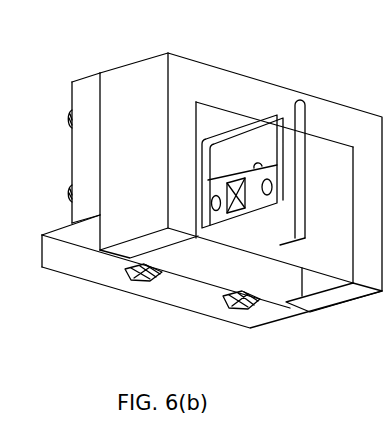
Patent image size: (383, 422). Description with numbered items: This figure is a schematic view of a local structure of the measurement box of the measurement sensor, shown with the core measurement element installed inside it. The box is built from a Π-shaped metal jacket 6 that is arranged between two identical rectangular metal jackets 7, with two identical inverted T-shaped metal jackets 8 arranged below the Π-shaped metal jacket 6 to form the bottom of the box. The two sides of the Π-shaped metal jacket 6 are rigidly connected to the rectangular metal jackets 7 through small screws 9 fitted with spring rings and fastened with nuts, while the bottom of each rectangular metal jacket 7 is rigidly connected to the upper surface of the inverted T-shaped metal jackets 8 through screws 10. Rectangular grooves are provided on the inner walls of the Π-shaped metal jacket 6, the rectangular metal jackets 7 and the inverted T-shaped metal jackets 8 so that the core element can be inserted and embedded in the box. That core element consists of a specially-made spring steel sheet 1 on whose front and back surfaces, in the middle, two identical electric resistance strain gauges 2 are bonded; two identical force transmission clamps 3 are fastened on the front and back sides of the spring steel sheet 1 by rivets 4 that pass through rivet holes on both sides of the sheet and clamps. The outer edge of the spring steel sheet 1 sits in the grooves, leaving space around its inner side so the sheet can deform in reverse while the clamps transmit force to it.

The spring steel sheet 1 is at (307, 117).
The strain gauge 2 is at (245, 200).
The force transmission clamp 3 is at (245, 200).
The rivet 4 is at (268, 208).
The Π-shaped metal jacket 6 is at (238, 87).
The rectangular metal jacket 7 is at (97, 97).
The inverted T-shaped metal jacket 8 is at (168, 288).
The small screw 9 is at (70, 112).
The screw 10 is at (138, 279).